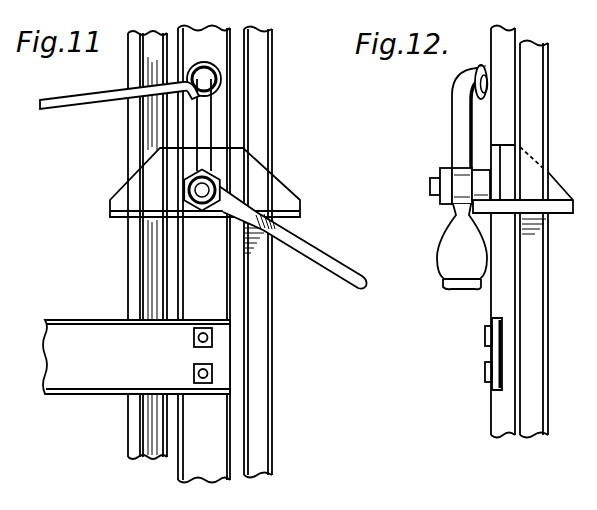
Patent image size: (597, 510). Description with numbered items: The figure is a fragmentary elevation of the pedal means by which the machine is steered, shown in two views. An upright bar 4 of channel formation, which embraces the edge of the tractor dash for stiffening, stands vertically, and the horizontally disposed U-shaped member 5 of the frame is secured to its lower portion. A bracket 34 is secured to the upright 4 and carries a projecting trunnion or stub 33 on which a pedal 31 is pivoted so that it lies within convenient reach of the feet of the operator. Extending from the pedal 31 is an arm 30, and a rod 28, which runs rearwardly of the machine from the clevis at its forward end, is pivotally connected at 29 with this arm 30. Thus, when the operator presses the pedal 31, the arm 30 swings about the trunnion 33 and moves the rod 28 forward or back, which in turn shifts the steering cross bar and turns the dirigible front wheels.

In FIG. 11, the upright bar 4 is at (200, 254).
In FIG. 12, the upright bar 4 is at (502, 406).
In FIG. 11, the horizontally disposed U-shaped member 5 is at (136, 357).
In FIG. 11, the rod 28 is at (78, 104).
In FIG. 12, the rod 28 is at (476, 70).
In FIG. 11, the pivotal connection 29 is at (221, 83).
In FIG. 12, the pivotal connection 29 is at (487, 83).
In FIG. 11, the arm 30 is at (205, 115).
In FIG. 12, the arm 30 is at (462, 111).
In FIG. 11, the pedal 31 is at (333, 257).
In FIG. 12, the pedal 31 is at (455, 230).
In FIG. 11, the trunnion 33 is at (193, 187).
In FIG. 12, the trunnion 33 is at (430, 188).
In FIG. 11, the bracket 34 is at (275, 192).
In FIG. 12, the bracket 34 is at (500, 153).